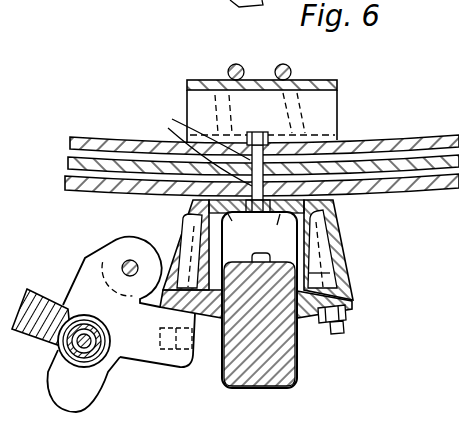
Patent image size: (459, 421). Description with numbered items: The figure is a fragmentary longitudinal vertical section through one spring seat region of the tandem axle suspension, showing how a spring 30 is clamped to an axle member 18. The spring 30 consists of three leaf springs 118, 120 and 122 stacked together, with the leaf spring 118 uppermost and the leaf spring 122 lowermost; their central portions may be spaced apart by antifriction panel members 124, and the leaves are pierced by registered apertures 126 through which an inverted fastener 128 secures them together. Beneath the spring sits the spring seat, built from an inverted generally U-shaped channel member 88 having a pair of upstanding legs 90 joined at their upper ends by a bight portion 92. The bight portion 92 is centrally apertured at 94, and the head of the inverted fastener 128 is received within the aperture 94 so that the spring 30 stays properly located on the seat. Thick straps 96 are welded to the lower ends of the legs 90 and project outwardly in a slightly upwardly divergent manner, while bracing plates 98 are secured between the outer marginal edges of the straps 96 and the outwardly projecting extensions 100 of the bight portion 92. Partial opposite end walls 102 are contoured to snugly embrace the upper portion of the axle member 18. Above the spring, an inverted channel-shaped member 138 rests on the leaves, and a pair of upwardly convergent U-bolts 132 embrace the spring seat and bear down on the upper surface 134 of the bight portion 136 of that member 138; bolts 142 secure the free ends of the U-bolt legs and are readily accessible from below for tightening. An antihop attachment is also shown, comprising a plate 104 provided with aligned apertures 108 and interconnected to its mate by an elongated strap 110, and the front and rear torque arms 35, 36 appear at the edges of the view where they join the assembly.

The axle member 18 is at (272, 300).
The spring 30 is at (414, 142).
The front torque arm 35 is at (223, 4).
The rear torque arm 36 is at (50, 297).
The inverted generally U-shaped channel member 88 is at (345, 261).
The upstanding legs 90 is at (190, 203).
The bight portion 92 is at (271, 233).
The central aperture 94 is at (240, 229).
The thick straps 96 is at (354, 306).
The bracing plates 98 is at (339, 236).
The outwardly projecting extensions 100 is at (337, 204).
The partial opposite end walls 102 is at (236, 255).
The plates 104 is at (73, 392).
The aligned apertures 108 is at (124, 261).
The elongated strap 110 is at (200, 330).
The uppermost leaf spring 118 is at (93, 145).
The middle leaf spring 120 is at (70, 162).
The lowermost leaf spring 122 is at (70, 183).
The antifriction panel members 124 is at (345, 178).
The registered apertures 126 is at (195, 146).
The fastener 128 is at (258, 130).
The U-bolts 132 is at (293, 71).
The upper surface 134 is at (193, 82).
The bight portion 136 is at (260, 71).
The inverted channel-shaped member 138 is at (324, 103).
The bolts 142 is at (350, 324).